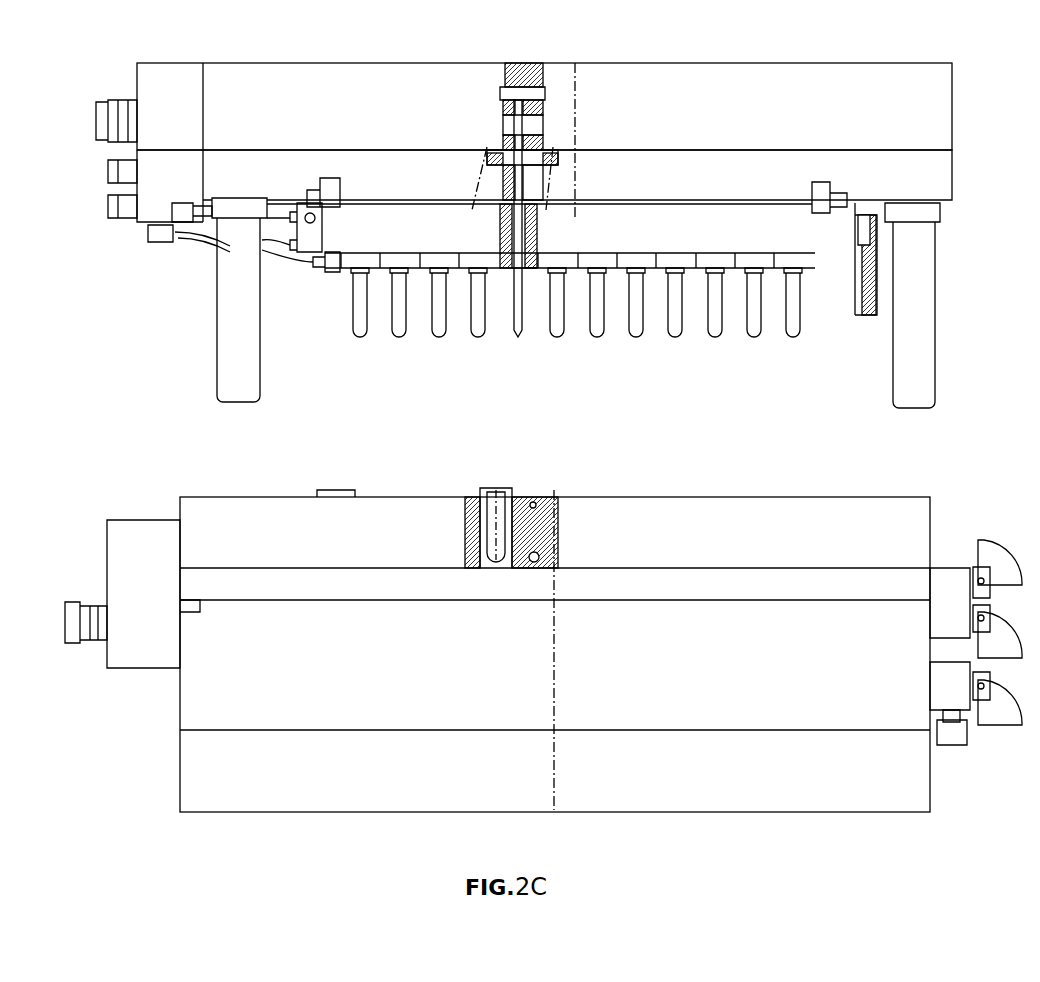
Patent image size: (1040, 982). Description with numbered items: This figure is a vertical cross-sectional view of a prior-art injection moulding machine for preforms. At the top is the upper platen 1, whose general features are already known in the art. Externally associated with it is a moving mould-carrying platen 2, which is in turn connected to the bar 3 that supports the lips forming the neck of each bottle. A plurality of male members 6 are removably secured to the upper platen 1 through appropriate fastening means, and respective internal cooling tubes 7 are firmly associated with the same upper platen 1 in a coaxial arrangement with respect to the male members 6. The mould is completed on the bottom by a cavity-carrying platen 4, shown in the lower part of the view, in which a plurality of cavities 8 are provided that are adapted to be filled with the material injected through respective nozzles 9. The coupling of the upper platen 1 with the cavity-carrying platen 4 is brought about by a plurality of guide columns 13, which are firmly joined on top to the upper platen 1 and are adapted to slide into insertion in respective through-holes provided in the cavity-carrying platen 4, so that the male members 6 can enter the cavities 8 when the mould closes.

The upper platen 1 is at (952, 108).
The moving mould-carrying platen 2 is at (955, 177).
The bar 3 is at (825, 232).
The cavity-carrying platen 4 is at (920, 518).
The male members 6 is at (705, 337).
The internal cooling tubes 7 is at (520, 178).
The cavities 8 is at (513, 500).
The nozzles 9 is at (488, 565).
The guide columns 13 is at (235, 350).